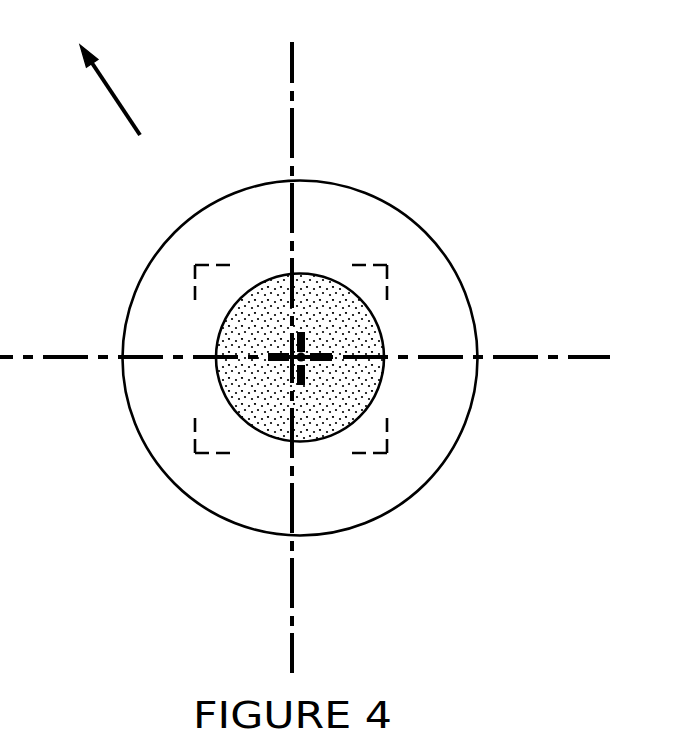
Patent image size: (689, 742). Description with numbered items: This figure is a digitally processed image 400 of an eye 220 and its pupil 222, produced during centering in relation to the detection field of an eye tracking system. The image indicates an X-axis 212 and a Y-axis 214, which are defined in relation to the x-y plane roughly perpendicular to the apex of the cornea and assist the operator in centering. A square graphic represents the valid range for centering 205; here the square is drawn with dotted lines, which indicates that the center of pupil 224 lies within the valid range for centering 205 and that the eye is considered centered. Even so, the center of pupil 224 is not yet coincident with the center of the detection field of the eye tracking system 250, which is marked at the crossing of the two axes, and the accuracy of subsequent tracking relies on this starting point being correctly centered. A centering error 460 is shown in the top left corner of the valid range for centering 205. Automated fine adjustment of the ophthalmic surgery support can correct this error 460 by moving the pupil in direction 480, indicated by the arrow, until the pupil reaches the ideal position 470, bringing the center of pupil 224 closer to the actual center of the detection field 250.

The digitally processed image 400 is at (583, 70).
The direction 480 is at (115, 100).
The Y-axis 214 is at (294, 133).
The X-axis 212 is at (515, 362).
The eye 220 is at (378, 196).
The pupil 222 is at (218, 343).
The valid range for centering 205 is at (389, 268).
The ideal position 470 is at (191, 266).
The centering error 460 is at (215, 280).
The center of detection field of eye tracking system 250 is at (286, 367).
The center of pupil 224 is at (308, 366).